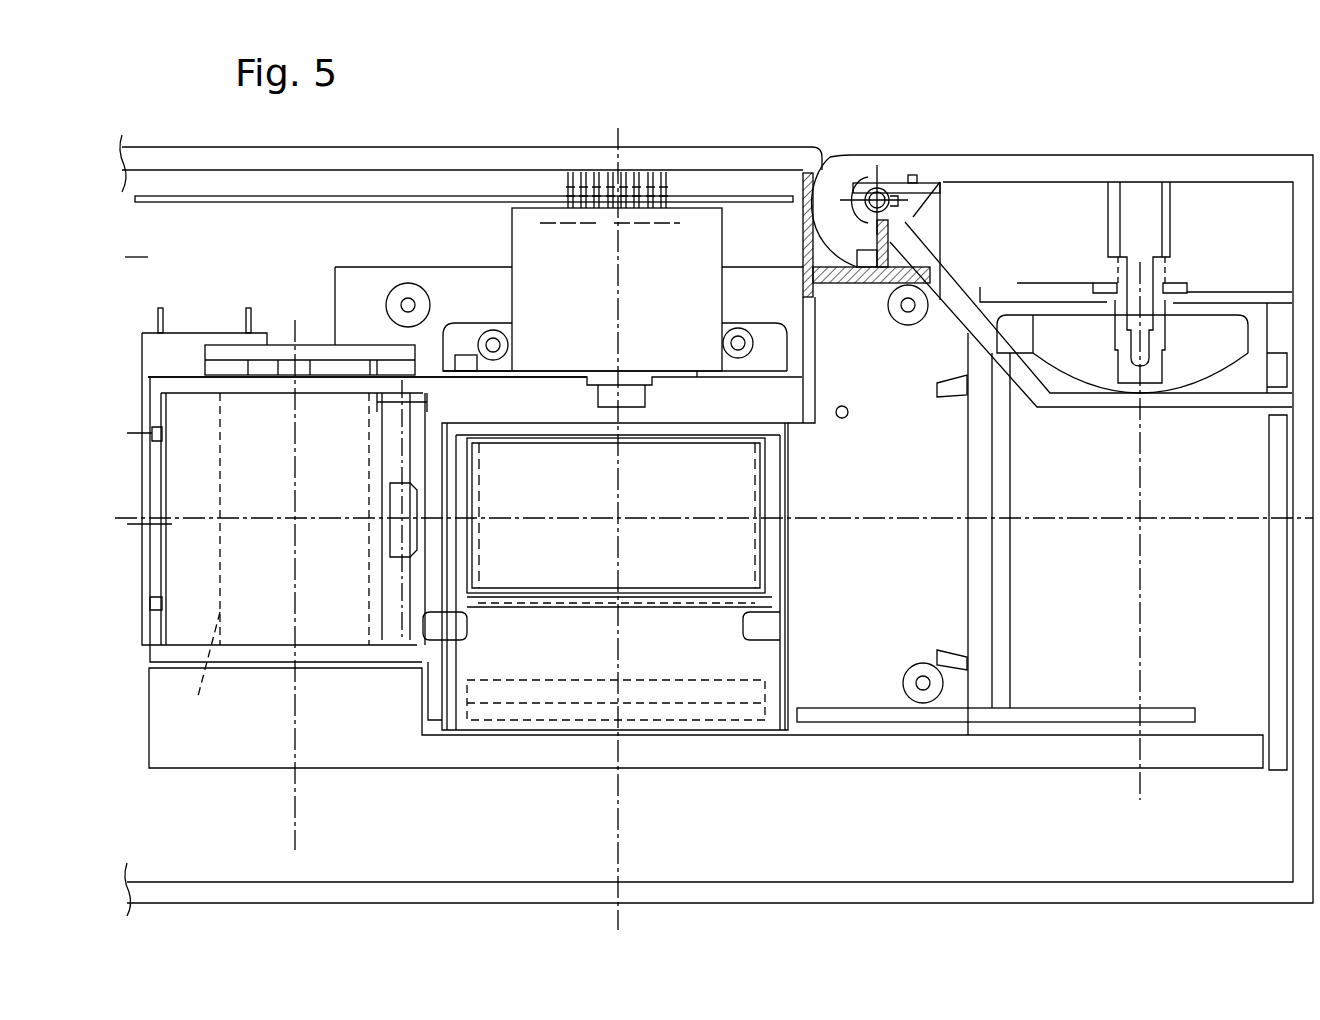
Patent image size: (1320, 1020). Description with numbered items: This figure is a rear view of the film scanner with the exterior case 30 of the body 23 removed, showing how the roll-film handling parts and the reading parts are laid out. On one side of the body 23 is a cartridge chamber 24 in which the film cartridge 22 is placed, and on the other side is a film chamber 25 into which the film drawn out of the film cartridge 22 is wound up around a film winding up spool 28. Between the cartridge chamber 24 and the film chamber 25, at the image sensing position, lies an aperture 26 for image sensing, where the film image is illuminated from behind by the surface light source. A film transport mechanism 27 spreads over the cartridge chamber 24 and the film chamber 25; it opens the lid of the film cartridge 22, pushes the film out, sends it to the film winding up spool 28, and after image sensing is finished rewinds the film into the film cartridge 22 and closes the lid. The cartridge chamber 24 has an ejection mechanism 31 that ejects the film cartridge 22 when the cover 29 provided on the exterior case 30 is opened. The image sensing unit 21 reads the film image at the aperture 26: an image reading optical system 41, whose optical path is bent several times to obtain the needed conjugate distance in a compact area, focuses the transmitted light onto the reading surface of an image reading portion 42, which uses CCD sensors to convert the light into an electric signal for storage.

The image sensing unit 21 is at (727, 305).
The film cartridge 22 is at (1230, 312).
The body 23 is at (818, 356).
The cartridge chamber 24 is at (1072, 312).
The film chamber 25 is at (190, 397).
The aperture 26 is at (778, 600).
The film transport mechanism 27 is at (537, 768).
The film winding up spool 28 is at (706, 690).
The cover 29 is at (1027, 168).
The exterior case 30 is at (737, 163).
The ejection mechanism 31 is at (1273, 583).
The image reading optical system 41 is at (767, 560).
The image reading portion 42 is at (543, 215).